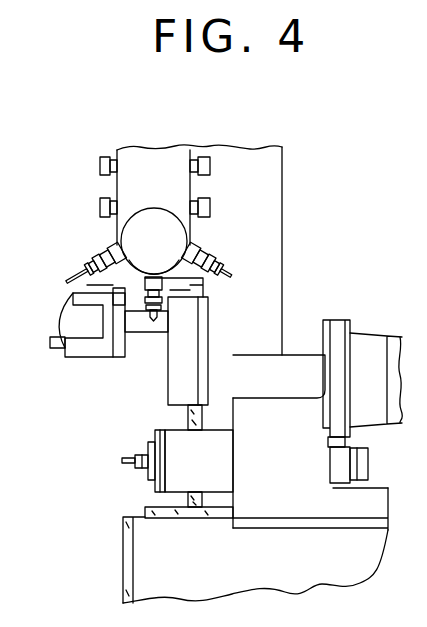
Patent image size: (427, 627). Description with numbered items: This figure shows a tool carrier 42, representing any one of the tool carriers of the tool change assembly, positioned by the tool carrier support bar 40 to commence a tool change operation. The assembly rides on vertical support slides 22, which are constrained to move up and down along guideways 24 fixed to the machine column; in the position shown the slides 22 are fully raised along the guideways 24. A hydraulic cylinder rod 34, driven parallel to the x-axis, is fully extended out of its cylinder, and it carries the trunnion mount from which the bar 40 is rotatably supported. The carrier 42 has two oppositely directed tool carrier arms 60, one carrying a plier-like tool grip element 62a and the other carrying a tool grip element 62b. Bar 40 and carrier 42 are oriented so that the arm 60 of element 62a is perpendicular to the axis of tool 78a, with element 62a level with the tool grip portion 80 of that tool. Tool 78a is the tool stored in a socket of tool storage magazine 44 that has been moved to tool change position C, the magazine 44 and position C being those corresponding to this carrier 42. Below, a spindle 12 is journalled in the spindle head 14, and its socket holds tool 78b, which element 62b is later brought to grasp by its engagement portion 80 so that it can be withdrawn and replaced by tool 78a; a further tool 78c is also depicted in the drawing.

The spindle 12 is at (150, 488).
The spindle head 14 is at (215, 465).
The vertical support slide 22 is at (202, 378).
The guideway 24 is at (202, 423).
The hydraulic cylinder rod 34 is at (138, 325).
The tool carrier support bar 40 is at (82, 323).
The tool carrier 42 is at (71, 343).
The tool storage magazine 44 is at (190, 188).
The tool carrier arm 60 is at (92, 293).
The tool grip element 62a is at (133, 298).
The tool grip element 62b is at (50, 346).
The tool 78a is at (157, 321).
The tool 78b is at (128, 461).
The nozzle 78c is at (223, 267).
The tool grip portion 80 is at (162, 301).
The tool change position C is at (163, 283).